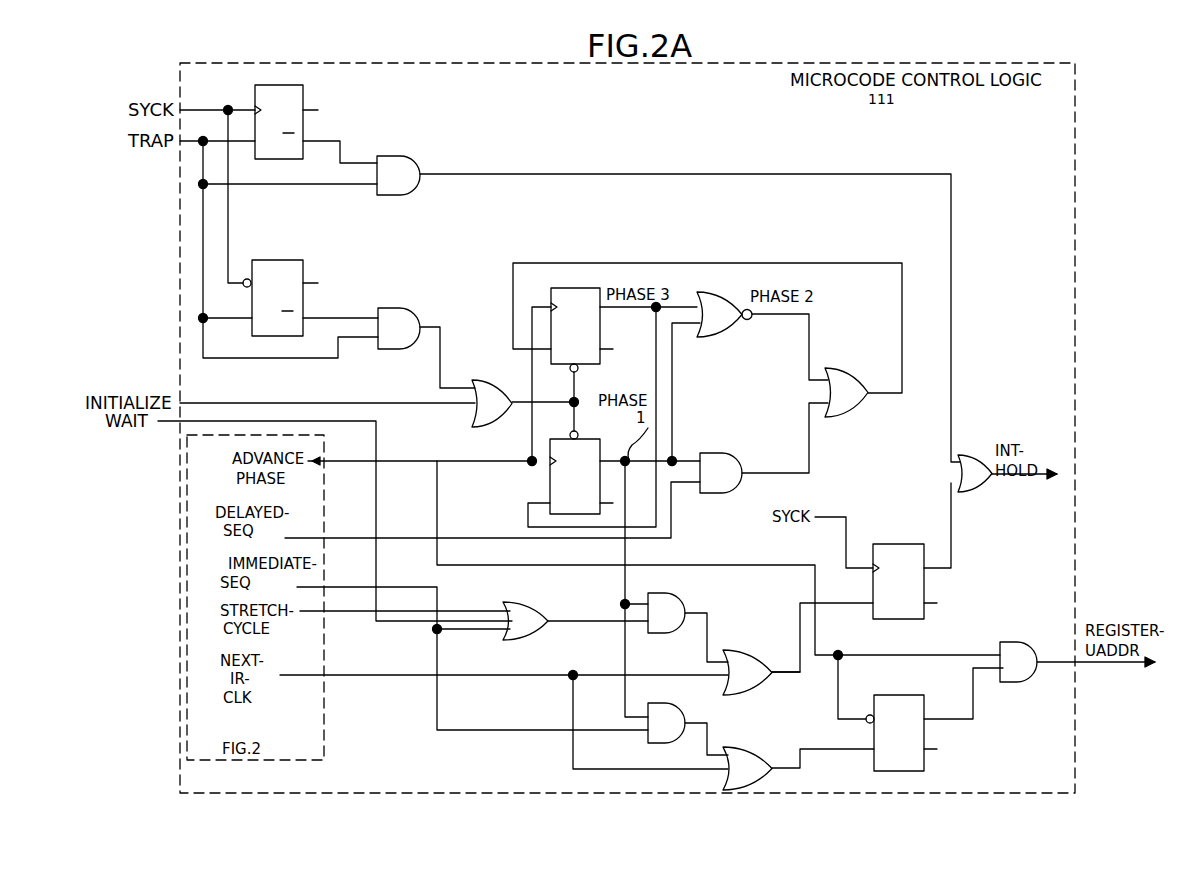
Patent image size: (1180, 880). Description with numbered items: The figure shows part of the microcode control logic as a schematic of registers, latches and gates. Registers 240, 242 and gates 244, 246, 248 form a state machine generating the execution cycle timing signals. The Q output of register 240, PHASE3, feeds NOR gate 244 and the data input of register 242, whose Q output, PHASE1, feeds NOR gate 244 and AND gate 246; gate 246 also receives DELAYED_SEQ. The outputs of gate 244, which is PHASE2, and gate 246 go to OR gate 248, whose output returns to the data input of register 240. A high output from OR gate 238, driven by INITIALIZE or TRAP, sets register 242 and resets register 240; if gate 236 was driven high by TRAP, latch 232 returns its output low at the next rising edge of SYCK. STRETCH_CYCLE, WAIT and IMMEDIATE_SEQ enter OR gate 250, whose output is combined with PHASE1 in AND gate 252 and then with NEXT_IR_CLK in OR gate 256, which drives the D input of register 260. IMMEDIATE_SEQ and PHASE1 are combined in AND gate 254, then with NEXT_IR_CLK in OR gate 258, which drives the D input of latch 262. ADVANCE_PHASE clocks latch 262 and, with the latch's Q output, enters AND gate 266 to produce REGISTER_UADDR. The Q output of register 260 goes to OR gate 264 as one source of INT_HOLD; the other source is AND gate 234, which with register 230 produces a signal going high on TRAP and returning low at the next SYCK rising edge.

The register 230 is at (298, 86).
The latch 232 is at (262, 262).
The AND gate 234 is at (384, 157).
The gate 236 is at (386, 309).
The OR gate 238 is at (506, 366).
The register 240 is at (588, 288).
The register 242 is at (586, 441).
The NOR gate 244 is at (708, 296).
The AND gate 246 is at (742, 454).
The OR gate 248 is at (832, 360).
The OR gate 250 is at (515, 603).
The AND gate 252 is at (672, 595).
The AND gate 254 is at (660, 704).
The OR gate 256 is at (734, 652).
The OR gate 258 is at (742, 749).
The register 260 is at (918, 545).
The latch 262 is at (918, 696).
The OR gate 264 is at (964, 460).
The AND gate 266 is at (1027, 645).